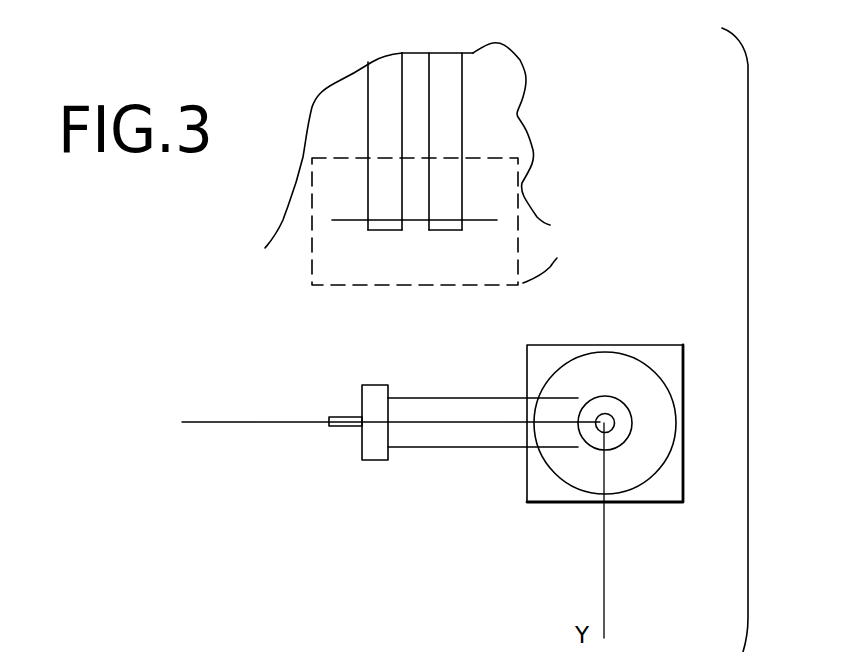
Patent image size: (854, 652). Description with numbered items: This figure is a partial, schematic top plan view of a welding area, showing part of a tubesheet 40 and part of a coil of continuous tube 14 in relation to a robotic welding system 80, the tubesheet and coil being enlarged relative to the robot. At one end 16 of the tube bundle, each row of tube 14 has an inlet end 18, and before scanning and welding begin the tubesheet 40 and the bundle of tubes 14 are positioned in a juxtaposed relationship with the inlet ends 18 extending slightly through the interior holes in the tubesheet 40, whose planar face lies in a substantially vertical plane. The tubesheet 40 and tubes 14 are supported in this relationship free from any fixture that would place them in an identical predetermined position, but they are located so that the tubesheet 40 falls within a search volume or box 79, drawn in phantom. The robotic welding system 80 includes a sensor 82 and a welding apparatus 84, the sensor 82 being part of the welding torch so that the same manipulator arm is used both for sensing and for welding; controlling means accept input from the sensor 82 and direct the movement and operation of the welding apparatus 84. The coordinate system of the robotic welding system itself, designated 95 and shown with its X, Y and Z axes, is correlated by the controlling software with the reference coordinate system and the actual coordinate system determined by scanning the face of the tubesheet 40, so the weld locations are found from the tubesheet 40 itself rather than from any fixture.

The continuous tube 14 is at (377, 142).
The end of tube bundle 16 is at (380, 210).
The inlet end 18 is at (395, 230).
The tubesheet 40 is at (340, 222).
The search volume or box 79 is at (523, 285).
The robotic welding system 80 is at (555, 353).
The sensor 82 is at (315, 457).
The welding apparatus 84 is at (340, 427).
The coordinate system for the robotic welding system 95 is at (260, 420).